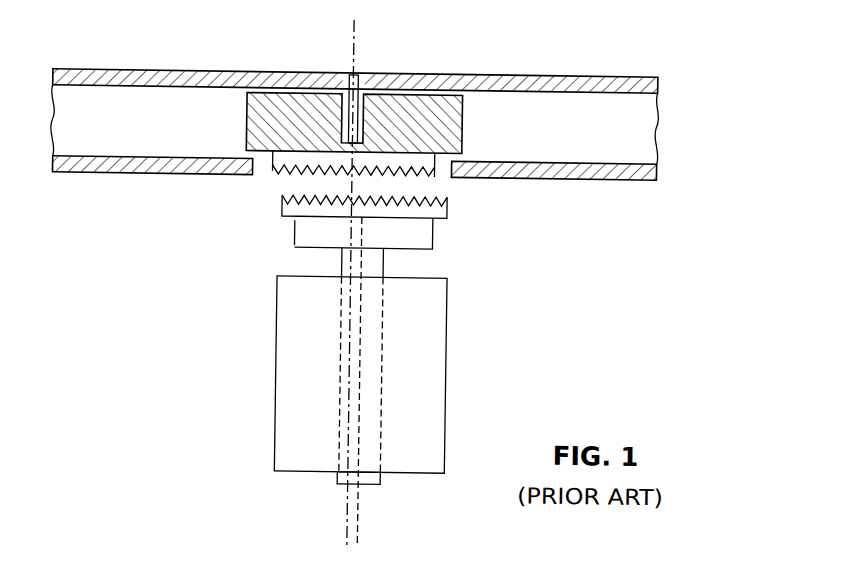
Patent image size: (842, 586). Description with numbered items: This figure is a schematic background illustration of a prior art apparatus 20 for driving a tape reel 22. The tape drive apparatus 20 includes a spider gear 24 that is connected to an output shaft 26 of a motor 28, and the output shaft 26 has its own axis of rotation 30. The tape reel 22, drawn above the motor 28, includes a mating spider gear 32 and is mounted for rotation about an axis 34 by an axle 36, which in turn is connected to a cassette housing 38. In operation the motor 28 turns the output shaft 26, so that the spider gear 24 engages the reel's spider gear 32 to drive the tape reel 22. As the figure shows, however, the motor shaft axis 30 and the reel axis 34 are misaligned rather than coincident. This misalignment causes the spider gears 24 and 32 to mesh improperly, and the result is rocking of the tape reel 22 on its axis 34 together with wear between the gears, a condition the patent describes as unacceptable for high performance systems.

The apparatus for driving a tape reel 20 is at (246, 348).
The tape reel 22 is at (245, 130).
The spider gear 24 is at (446, 209).
The output shaft 26 is at (341, 267).
The motor 28 is at (447, 338).
The axis of rotation 30 is at (361, 518).
The spider gear 32 is at (281, 172).
The axis 34 is at (350, 40).
The axle 36 is at (357, 119).
The cassette housing 38 is at (592, 73).